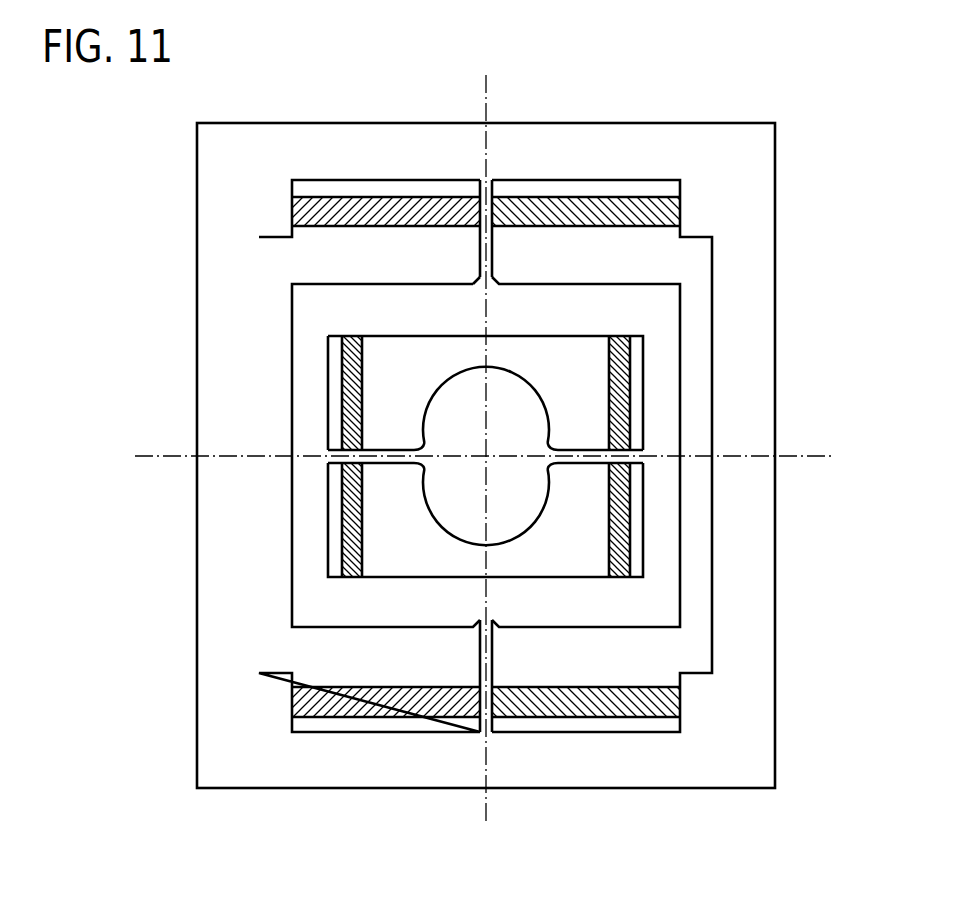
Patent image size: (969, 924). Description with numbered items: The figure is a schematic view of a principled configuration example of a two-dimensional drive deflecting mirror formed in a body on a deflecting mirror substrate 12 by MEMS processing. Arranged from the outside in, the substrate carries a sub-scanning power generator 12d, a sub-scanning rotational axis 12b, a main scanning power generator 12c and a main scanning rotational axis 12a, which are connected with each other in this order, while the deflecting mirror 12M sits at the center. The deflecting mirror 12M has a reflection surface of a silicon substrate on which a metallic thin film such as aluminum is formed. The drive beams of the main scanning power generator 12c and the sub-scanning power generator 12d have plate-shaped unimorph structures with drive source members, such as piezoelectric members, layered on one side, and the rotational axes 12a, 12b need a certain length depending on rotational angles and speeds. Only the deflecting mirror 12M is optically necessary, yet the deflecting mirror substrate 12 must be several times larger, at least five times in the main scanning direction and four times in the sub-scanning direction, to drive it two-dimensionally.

The deflecting mirror substrate 12 is at (255, 780).
The main scanning rotational axis 12a is at (408, 448).
The sub-scanning rotational axis 12b is at (492, 253).
The main scanning power generator 12c is at (350, 488).
The sub-scanning power generator 12d is at (447, 200).
The deflecting mirror 12M is at (515, 502).